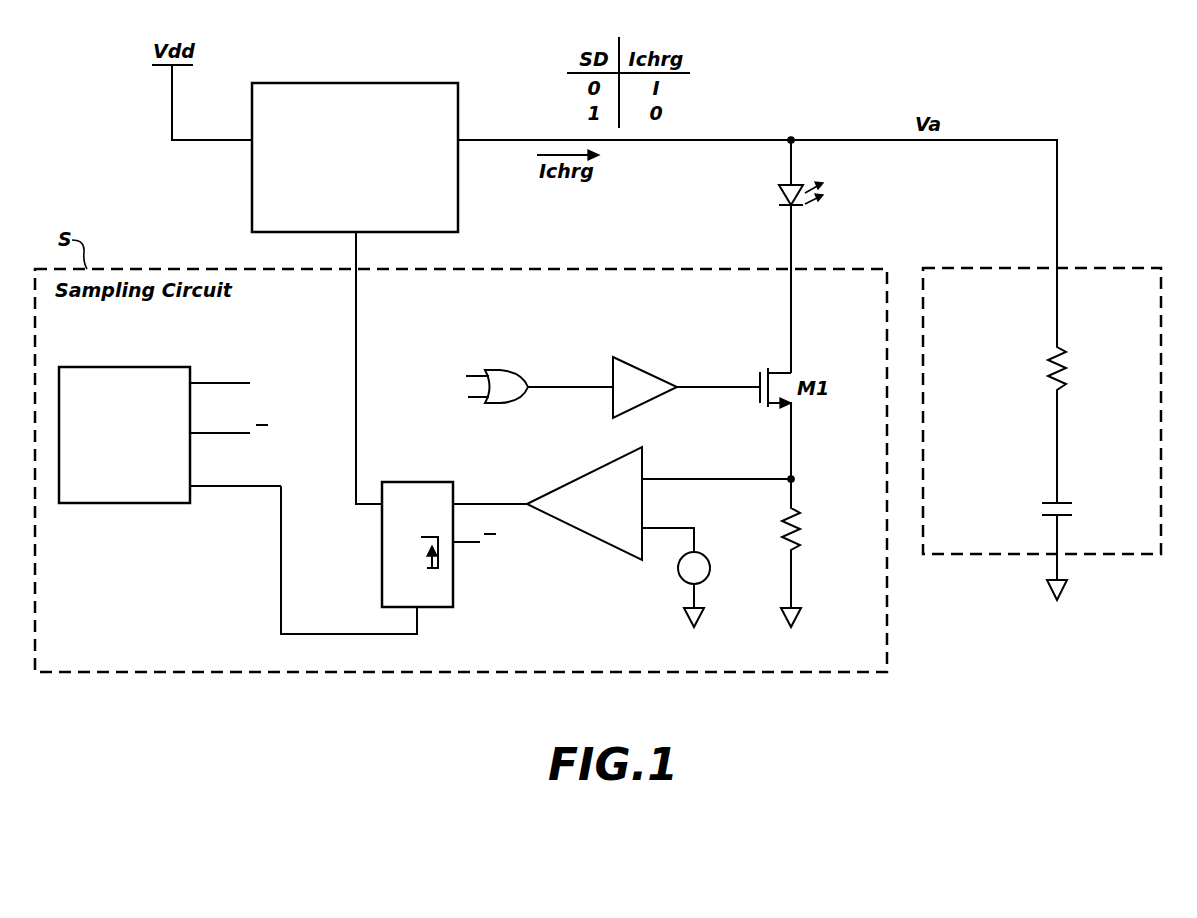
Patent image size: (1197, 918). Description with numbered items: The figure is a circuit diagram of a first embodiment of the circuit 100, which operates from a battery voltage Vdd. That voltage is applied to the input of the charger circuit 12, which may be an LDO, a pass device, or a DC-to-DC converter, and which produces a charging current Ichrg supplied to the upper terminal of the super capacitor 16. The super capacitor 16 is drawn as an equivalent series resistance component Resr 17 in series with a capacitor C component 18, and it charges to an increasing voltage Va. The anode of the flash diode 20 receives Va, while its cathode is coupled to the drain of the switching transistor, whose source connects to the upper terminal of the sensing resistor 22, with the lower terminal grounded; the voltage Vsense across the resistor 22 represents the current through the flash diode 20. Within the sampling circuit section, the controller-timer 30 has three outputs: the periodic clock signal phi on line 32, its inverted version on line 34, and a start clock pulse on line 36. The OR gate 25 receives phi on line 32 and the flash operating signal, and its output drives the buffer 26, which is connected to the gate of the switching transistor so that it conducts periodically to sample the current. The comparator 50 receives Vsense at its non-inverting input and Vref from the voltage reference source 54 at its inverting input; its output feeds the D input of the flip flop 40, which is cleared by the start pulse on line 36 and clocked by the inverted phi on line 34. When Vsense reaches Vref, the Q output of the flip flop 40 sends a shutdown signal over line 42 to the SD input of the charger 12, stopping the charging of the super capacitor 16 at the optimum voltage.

The circuit 100 is at (1096, 95).
The charger circuit 12 is at (416, 83).
The flash diode 20 is at (787, 186).
The resistor 22 is at (806, 516).
The buffer 26 is at (645, 370).
The OR gate 25 is at (520, 397).
The comparator 50 is at (586, 473).
The voltage reference source 54 is at (709, 561).
The flip flop 40 is at (382, 568).
The line 42 is at (356, 332).
The controller-timer 30 is at (95, 367).
The line 32 is at (209, 383).
The line 34 is at (209, 433).
The line 36 is at (209, 486).
The super capacitor 16 is at (969, 268).
The equivalent series resistance component 17 is at (1068, 355).
The capacitor C component 18 is at (1075, 512).